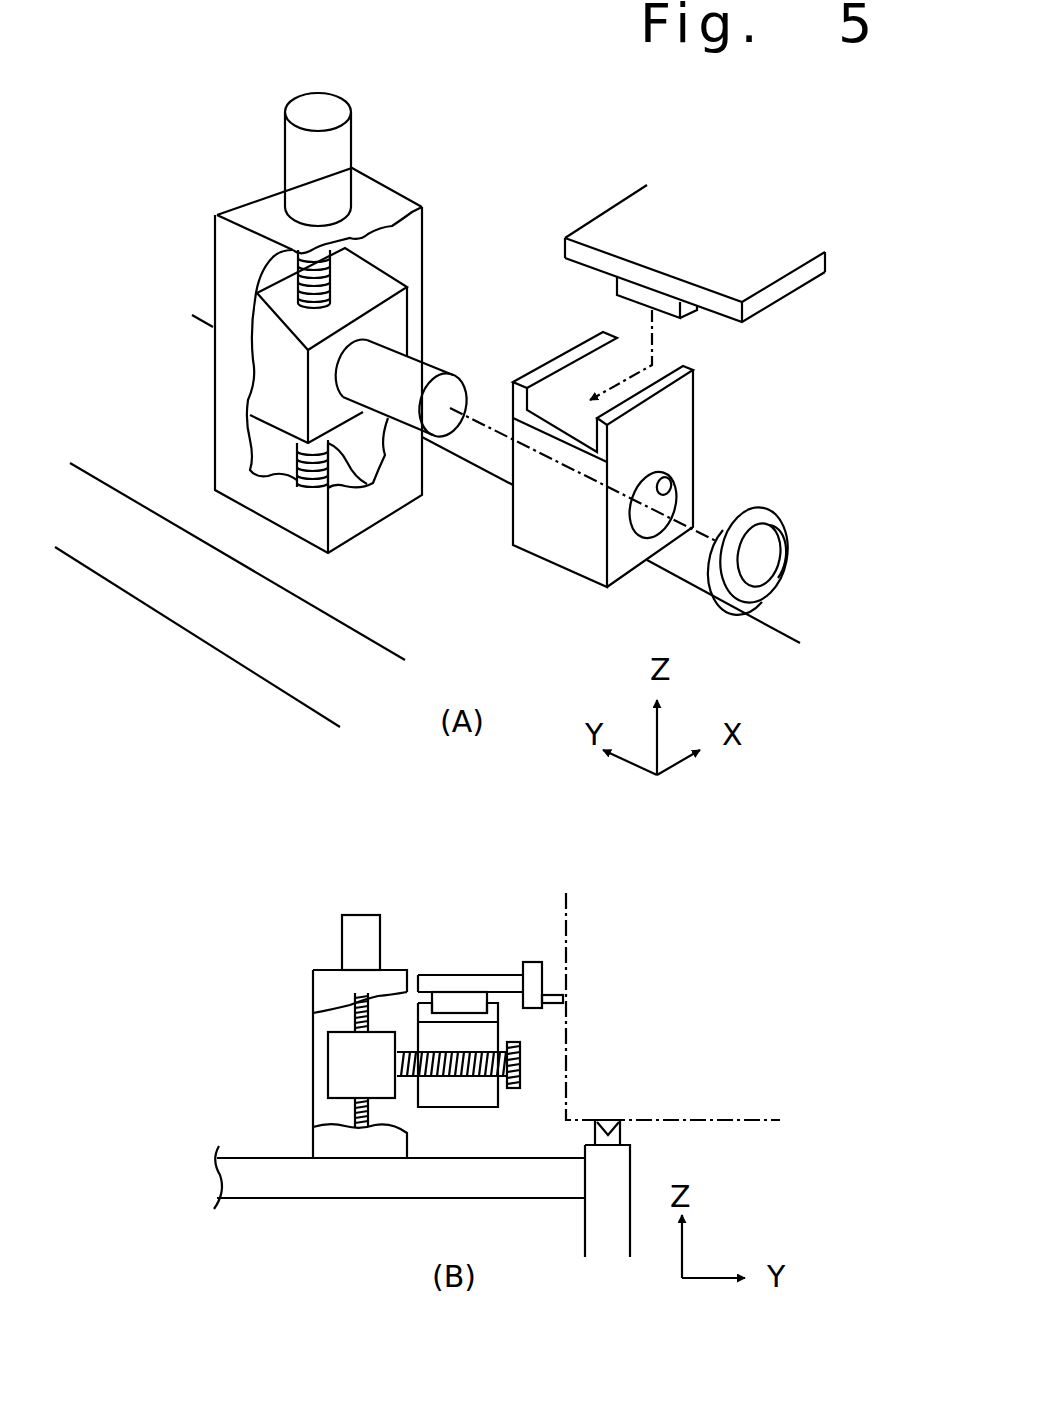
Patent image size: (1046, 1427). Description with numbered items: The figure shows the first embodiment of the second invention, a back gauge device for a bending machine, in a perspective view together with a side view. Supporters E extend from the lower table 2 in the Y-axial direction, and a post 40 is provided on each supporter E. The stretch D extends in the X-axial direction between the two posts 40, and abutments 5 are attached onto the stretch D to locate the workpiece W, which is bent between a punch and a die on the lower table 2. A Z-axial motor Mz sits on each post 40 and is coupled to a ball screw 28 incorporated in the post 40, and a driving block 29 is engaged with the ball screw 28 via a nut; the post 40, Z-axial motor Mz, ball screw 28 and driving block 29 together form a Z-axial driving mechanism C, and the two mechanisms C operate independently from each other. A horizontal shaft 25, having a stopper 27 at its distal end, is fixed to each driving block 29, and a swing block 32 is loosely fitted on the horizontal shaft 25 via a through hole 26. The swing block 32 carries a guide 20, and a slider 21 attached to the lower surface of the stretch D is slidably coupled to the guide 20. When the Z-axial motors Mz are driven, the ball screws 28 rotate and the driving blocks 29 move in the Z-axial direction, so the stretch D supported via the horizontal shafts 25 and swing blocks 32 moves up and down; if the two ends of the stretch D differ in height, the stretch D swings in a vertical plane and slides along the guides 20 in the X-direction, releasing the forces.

The lower table 2 is at (610, 1178).
The abutment 5 is at (560, 992).
The guide 20 is at (677, 397).
The slider 21 is at (623, 285).
The horizontal shaft 25 is at (420, 383).
The through hole 26 is at (672, 480).
The stopper 27 is at (785, 525).
The ball screw 28 is at (327, 455).
The driving block 29 is at (362, 288).
The swing block 32 is at (553, 520).
The post 40 is at (255, 213).
The Z-axial motor Mz is at (335, 148).
The Z-axial driving mechanism C is at (208, 247).
The stretch D is at (613, 192).
The supporter E is at (162, 462).
The workpiece W is at (590, 1117).